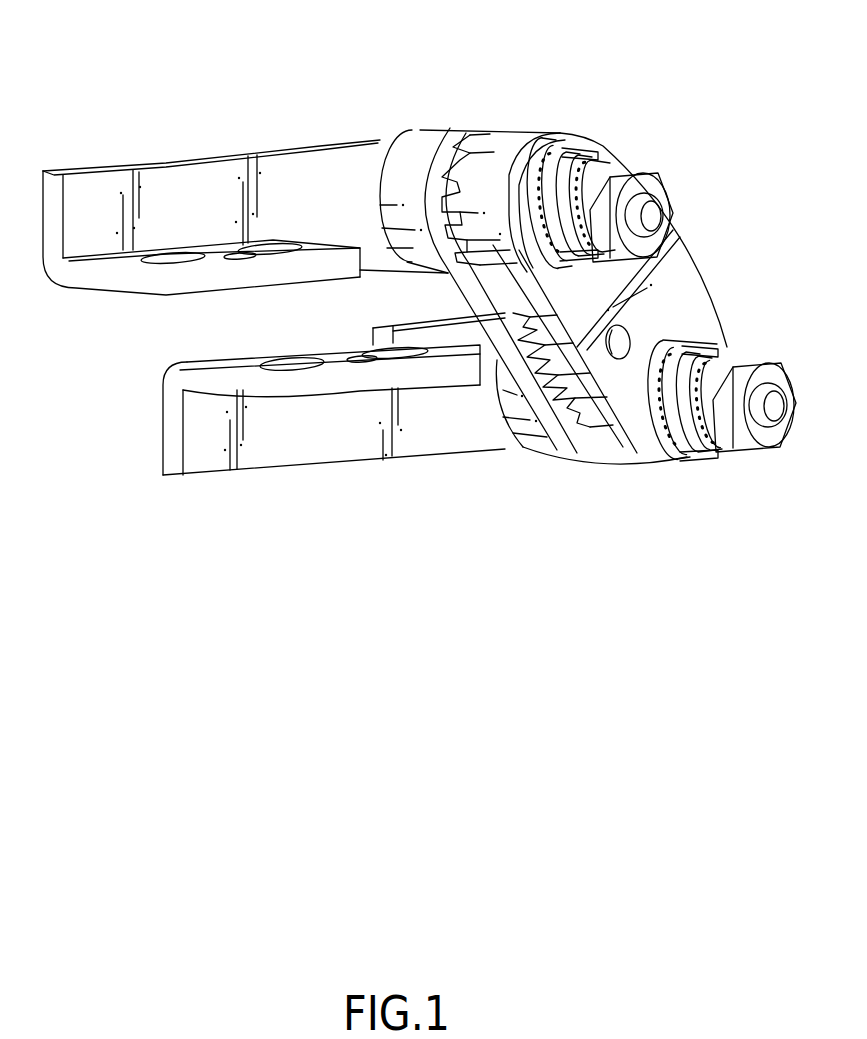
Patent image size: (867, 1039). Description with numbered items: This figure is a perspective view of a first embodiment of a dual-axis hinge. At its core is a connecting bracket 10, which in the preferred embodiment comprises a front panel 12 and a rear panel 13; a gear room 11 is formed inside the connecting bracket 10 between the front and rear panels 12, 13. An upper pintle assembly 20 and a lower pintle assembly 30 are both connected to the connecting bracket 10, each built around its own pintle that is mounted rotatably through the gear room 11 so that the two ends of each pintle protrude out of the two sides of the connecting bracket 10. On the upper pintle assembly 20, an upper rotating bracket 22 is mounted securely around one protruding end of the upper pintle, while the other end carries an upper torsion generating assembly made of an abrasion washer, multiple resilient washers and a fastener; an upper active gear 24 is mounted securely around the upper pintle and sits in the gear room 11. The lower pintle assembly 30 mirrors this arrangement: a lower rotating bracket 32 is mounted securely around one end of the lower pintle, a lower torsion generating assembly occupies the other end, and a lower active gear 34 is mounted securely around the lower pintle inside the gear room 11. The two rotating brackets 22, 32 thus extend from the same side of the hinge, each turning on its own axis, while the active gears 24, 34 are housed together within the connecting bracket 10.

The connecting bracket 10 is at (557, 288).
The gear room 11 is at (521, 307).
The front panel 12 is at (519, 137).
The rear panel 13 is at (435, 132).
The upper pintle assembly 20 is at (236, 143).
The upper rotating bracket 22 is at (130, 180).
The upper active gear 24 is at (457, 160).
The lower pintle assembly 30 is at (392, 478).
The lower rotating bracket 32 is at (270, 453).
The lower active gear 34 is at (573, 403).